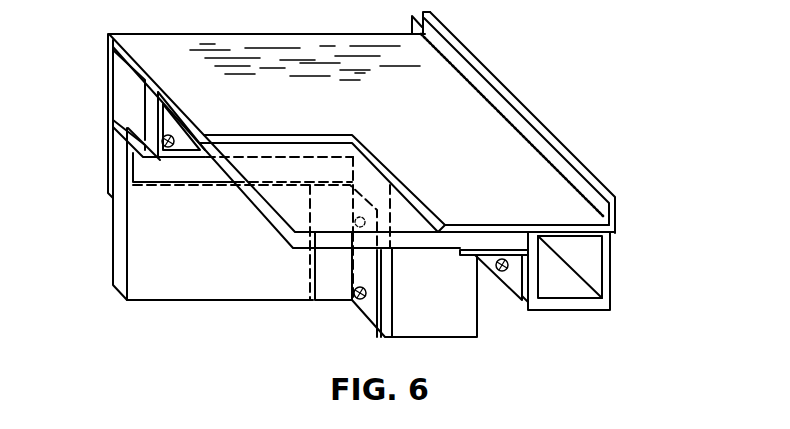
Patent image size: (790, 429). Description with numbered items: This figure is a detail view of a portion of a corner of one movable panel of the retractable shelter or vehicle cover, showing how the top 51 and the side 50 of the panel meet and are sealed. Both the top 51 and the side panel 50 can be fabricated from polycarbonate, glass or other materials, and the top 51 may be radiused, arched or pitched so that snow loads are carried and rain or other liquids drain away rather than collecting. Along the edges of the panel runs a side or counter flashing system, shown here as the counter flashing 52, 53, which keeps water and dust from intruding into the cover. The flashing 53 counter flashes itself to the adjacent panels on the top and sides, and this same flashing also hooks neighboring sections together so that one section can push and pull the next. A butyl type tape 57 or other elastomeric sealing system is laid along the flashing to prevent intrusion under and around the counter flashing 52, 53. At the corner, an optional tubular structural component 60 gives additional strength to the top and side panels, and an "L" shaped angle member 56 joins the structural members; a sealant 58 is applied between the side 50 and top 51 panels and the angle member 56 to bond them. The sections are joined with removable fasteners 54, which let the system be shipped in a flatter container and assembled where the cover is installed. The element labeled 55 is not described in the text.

The side panel 50 is at (122, 288).
The top panel 51 is at (405, 101).
The counter flashing 52 is at (408, 33).
The flashing 53 is at (582, 162).
The fasteners 54 is at (353, 302).
The side panel opening 55 is at (108, 88).
The angle member 56 is at (523, 300).
The butyl type tape 57 is at (541, 150).
The sealant 58 is at (112, 157).
The tubular structural components 60 is at (612, 298).